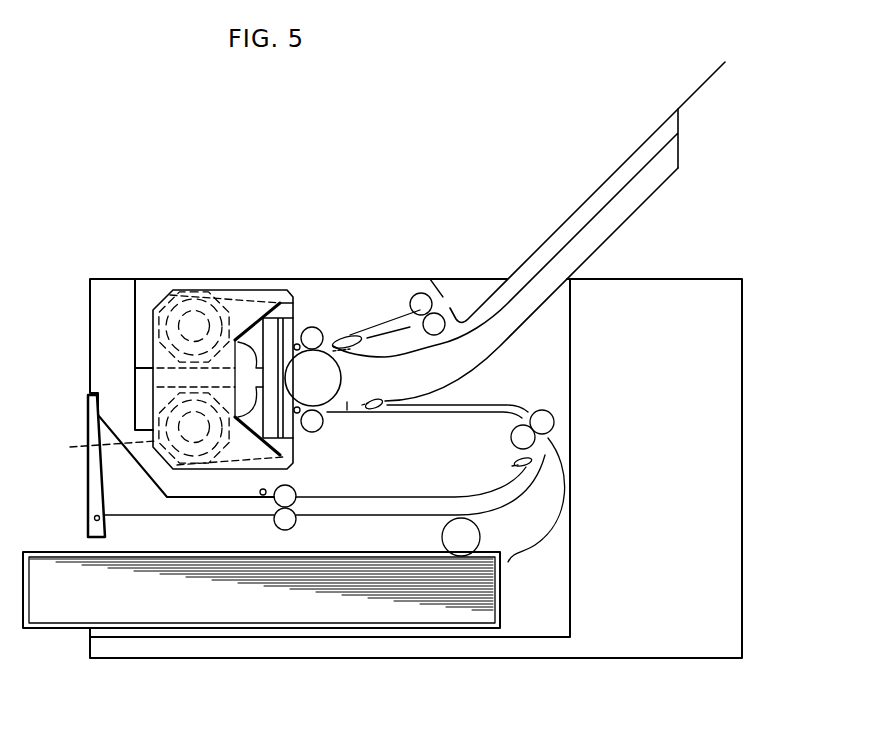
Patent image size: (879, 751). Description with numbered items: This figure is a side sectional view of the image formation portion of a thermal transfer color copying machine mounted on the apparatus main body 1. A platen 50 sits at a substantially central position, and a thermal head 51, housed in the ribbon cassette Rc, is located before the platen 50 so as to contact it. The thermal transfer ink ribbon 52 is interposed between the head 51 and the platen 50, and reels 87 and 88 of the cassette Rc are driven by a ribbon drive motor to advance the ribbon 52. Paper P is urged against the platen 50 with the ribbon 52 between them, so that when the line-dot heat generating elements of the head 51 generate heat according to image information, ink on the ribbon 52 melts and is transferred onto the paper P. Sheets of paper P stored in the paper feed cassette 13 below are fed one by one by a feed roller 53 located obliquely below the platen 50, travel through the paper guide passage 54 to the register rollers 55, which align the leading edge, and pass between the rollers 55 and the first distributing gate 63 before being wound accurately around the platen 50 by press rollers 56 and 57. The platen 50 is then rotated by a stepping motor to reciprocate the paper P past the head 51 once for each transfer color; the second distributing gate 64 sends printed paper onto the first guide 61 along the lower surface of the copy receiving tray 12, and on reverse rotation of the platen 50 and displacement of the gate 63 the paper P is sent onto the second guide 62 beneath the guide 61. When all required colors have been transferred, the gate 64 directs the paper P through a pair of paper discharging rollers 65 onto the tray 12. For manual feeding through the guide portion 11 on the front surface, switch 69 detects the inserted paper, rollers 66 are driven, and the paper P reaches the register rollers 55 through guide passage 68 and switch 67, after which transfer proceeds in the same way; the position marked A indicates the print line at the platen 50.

The apparatus main body 1 is at (705, 302).
The guide portion 11 is at (88, 497).
The copy receiving tray 12 is at (687, 100).
The paper feed cassette 13 is at (281, 627).
The platen 50 is at (342, 375).
The thermal head 51 is at (282, 332).
The thermal transfer ink ribbon 52 is at (313, 327).
The feed roller 53 is at (441, 537).
The paper guide passage 54 is at (552, 488).
The register rollers 55 is at (543, 409).
The press roller 56 is at (313, 433).
The press roller 57 is at (325, 330).
The first guide 61 is at (647, 158).
The second guide 62 is at (645, 202).
The first distributing gate 63 is at (373, 415).
The second distributing gate 64 is at (353, 333).
The paper discharging rollers 65 is at (417, 292).
The rollers 66 is at (273, 527).
The switch 67 is at (515, 460).
The guide passage 68 is at (475, 498).
The switch 69 is at (259, 492).
The reel 87 is at (194, 305).
The reel 88 is at (97, 449).
The ribbon cassette Rc is at (218, 290).
The print position A is at (427, 424).
The paper P is at (487, 568).